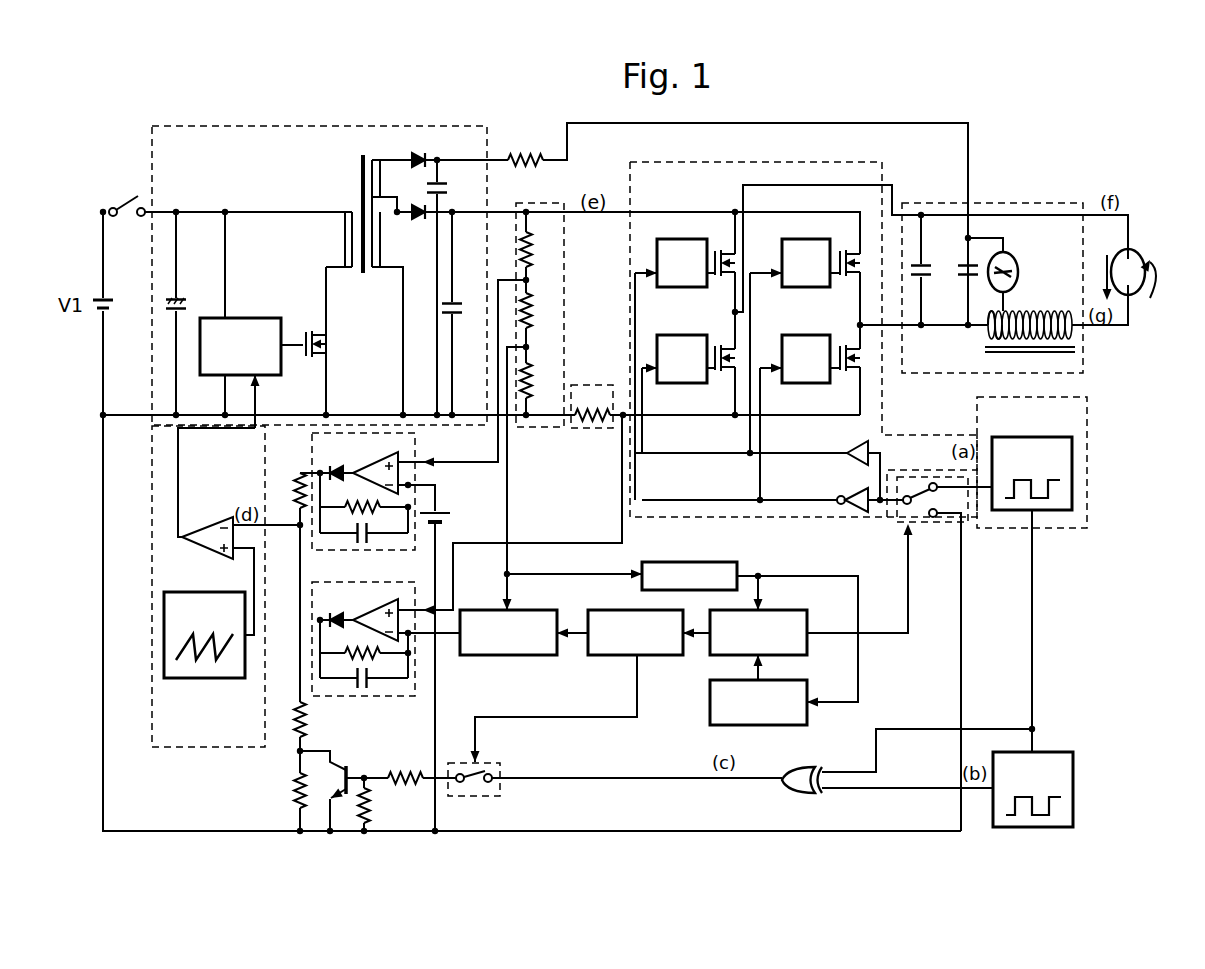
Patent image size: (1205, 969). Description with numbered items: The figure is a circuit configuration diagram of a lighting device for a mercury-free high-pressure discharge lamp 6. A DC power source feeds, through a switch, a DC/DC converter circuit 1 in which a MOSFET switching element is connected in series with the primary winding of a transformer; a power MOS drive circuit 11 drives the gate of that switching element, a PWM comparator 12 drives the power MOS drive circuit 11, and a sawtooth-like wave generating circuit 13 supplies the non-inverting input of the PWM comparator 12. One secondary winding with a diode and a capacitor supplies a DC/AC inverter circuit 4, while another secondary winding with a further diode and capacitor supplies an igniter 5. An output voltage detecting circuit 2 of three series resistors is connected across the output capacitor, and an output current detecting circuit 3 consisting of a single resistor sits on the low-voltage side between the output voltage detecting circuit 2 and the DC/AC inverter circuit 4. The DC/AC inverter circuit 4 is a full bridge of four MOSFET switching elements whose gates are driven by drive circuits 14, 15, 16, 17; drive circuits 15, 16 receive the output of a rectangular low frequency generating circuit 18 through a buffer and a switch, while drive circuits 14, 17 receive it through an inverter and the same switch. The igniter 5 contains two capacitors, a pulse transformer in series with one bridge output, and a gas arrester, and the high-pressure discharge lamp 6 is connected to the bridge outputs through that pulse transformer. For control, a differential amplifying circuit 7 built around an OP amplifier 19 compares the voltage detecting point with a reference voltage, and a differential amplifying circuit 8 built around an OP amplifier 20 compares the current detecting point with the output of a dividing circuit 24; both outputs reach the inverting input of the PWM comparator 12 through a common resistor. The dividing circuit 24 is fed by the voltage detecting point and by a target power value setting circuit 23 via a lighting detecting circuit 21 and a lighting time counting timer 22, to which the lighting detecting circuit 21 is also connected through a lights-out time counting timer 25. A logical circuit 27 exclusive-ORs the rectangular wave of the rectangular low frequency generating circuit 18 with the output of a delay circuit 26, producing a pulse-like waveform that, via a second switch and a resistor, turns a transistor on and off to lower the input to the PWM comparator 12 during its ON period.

The DC/DC converter circuit 1 is at (318, 126).
The output voltage detecting circuit 2 is at (545, 203).
The output current detecting circuit 3 is at (589, 385).
The DC/AC inverter circuit 4 is at (795, 162).
The igniter 5 is at (1005, 203).
The high-pressure discharge lamp 6 is at (1135, 296).
The differential amplifying circuit 7 is at (372, 550).
The differential amplifying circuit 8 is at (382, 696).
The power MOS drive circuit 11 is at (248, 318).
The PWM comparator 12 is at (217, 522).
The sawtooth-like wave generating circuit 13 is at (210, 678).
The drive circuit 14 is at (672, 287).
The drive circuit 15 is at (690, 383).
The drive circuit 16 is at (802, 287).
The drive circuit 17 is at (817, 383).
The rectangular low frequency generating circuit 18 is at (1015, 437).
The OP amplifier 19 is at (388, 453).
The OP amplifier 20 is at (388, 602).
The lighting detecting circuit 21 is at (710, 562).
The lighting time counting timer 22 is at (774, 610).
The target power value setting circuit 23 is at (648, 656).
The dividing circuit 24 is at (522, 656).
The lights-out time counting timer 25 is at (798, 680).
The delay circuit 26 is at (1036, 754).
The logical circuit 27 is at (808, 765).